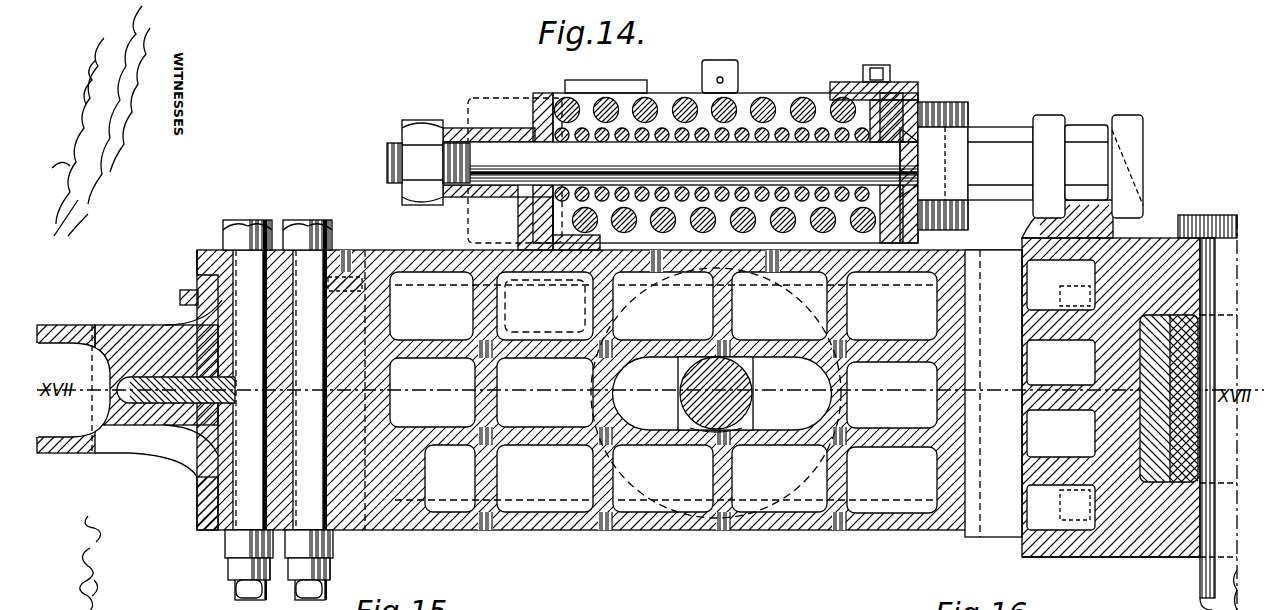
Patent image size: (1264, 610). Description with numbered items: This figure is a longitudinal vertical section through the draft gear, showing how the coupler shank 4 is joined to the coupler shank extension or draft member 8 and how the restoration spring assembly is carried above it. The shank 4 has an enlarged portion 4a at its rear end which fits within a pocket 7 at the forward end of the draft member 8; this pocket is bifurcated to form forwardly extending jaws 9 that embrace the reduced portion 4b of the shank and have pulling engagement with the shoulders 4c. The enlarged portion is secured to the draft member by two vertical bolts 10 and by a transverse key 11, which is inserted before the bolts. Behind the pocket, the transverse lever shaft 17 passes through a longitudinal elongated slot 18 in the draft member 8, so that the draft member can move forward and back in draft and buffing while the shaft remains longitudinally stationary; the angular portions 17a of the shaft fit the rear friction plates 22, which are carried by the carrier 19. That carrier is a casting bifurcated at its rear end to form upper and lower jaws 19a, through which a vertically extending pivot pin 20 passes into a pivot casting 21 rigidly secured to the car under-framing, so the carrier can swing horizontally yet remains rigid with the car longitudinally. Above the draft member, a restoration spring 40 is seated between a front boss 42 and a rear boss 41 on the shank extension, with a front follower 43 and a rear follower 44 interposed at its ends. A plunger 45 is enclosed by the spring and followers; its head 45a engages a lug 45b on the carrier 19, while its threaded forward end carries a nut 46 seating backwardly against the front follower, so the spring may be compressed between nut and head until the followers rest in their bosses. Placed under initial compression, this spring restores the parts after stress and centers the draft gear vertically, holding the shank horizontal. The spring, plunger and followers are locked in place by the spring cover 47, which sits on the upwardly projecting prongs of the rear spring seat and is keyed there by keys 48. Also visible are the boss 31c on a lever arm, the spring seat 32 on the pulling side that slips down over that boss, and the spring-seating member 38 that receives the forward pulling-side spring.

The coupler shank 4 is at (58, 326).
The enlarged portion of the coupler shank 4a is at (342, 285).
The reduced portion of the coupler shank 4b is at (125, 455).
The shoulders 4c is at (181, 294).
The pocket 7 is at (197, 268).
The coupler shank extension or draft member 8 is at (965, 385).
The jaws 9 is at (114, 325).
The vertical bolts 10 is at (278, 415).
The transverse key 11 is at (178, 403).
The lever shaft 17 is at (748, 378).
The angular portions of the lever shaft 17a is at (748, 426).
The longitudinal elongated slot 18 is at (721, 393).
The carrier for the rear friction plates 19 is at (1150, 245).
The upper and lower jaws 19a is at (1111, 571).
The pivot pin 20 is at (1218, 225).
The pivot casting 21 is at (1170, 452).
The rear friction plates 22 is at (993, 393).
The boss 31c is at (720, 62).
The spring seat on the pulling side 32 is at (640, 93).
The spring-seating member 38 is at (976, 127).
The restoration spring 40 is at (740, 105).
The rear boss 41 is at (925, 104).
The front boss 42 is at (518, 218).
The front follower 43 is at (505, 128).
The rear follower 44 is at (905, 150).
The plunger 45 is at (738, 163).
The head of the plunger 45a is at (1143, 140).
The lug 45b is at (1086, 125).
The nut 46 is at (422, 128).
The spring cover 47 is at (900, 95).
The keys 48 is at (878, 68).